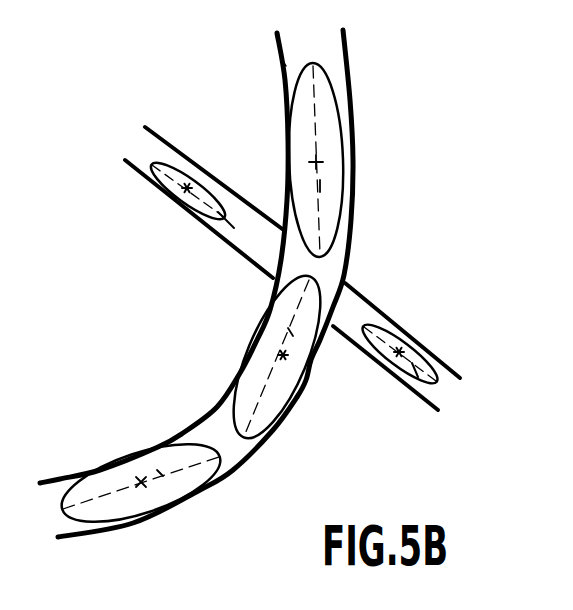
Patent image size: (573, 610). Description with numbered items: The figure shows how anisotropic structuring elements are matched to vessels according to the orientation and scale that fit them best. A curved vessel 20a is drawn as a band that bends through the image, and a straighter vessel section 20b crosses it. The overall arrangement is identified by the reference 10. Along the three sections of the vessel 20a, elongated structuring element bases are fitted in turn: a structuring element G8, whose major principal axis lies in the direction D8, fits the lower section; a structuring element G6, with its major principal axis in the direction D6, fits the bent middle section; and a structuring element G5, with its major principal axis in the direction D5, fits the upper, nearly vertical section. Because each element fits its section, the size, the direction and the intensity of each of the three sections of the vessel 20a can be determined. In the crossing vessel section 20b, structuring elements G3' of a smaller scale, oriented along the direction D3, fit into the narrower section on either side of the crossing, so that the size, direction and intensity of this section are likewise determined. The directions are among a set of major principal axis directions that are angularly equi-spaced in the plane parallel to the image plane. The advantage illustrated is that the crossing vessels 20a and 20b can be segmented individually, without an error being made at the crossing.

The semiconductor film strip / device region 10 is at (397, 95).
The vessel 20a is at (292, 62).
The vessel section 20b is at (143, 165).
The structuring element G3' is at (315, 212).
The major principal axis direction D3 is at (230, 224).
The structuring element G5 is at (323, 100).
The major principal axis direction D5 is at (320, 186).
The structuring element G6 is at (310, 310).
The major principal axis direction D6 is at (290, 332).
The structuring element G8 is at (117, 507).
The major principal axis direction D8 is at (160, 473).